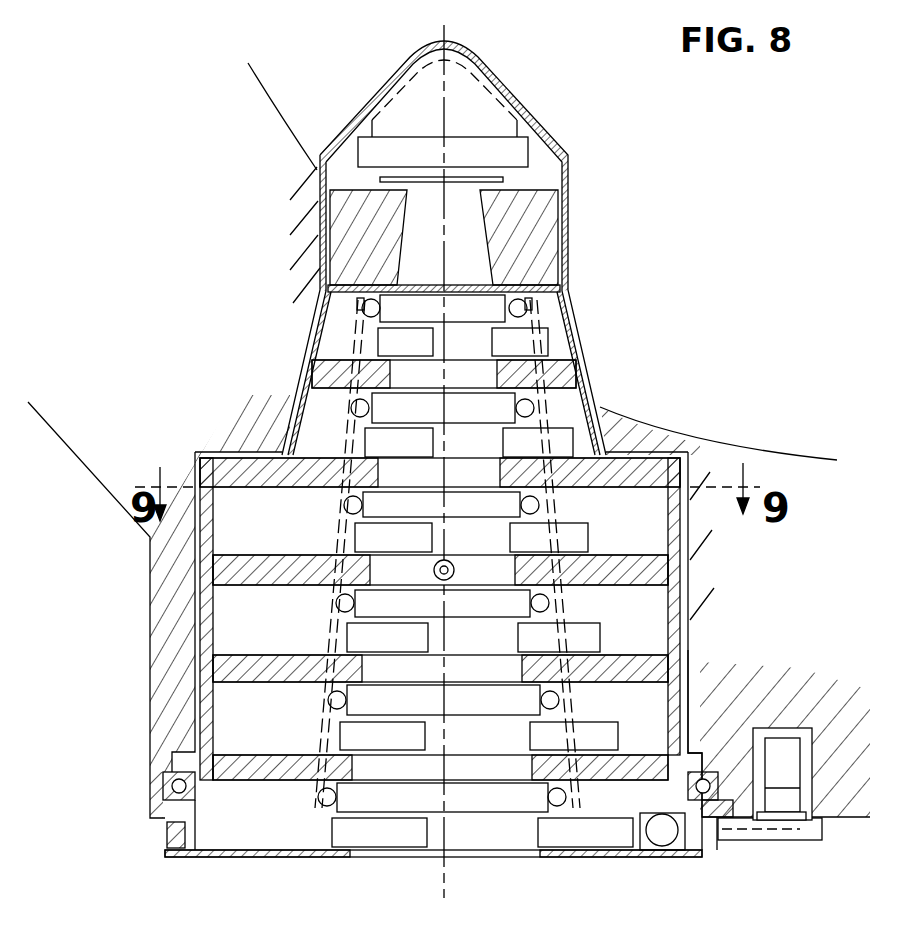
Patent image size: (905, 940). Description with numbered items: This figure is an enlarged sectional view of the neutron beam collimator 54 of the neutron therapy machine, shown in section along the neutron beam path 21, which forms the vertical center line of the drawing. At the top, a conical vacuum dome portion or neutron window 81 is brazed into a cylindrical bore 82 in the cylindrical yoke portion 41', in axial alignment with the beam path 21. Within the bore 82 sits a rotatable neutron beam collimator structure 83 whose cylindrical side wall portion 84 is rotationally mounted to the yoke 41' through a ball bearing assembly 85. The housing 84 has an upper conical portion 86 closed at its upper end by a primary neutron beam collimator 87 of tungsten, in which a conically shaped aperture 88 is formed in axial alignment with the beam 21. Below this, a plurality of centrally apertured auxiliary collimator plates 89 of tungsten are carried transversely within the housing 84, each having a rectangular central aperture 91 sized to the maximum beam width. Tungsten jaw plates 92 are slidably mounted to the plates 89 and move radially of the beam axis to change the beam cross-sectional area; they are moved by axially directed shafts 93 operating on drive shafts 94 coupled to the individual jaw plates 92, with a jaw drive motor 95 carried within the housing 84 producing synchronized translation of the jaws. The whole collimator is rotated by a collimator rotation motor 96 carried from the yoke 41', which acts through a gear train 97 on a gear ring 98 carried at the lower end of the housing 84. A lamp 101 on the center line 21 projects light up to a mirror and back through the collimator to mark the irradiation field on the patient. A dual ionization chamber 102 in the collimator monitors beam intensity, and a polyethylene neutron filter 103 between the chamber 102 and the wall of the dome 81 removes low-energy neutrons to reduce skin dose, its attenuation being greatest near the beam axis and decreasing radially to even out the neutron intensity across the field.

The neutron beam path 21 is at (444, 900).
The cylindrical yoke portion 41' is at (449, 440).
The neutron beam collimator 54 is at (232, 380).
The conical vacuum dome portion 81 is at (512, 92).
The cylindrical bore 82 is at (655, 462).
The rotatable neutron beam collimator structure 83 is at (224, 803).
The cylindrical side wall portion 84 is at (678, 708).
The ball bearing assembly 85 is at (700, 787).
The upper conical portion 86 is at (580, 335).
The primary neutron beam collimator 87 is at (540, 245).
The conically shaped aperture 88 is at (410, 213).
The auxiliary collimator plates 89 is at (560, 368).
The rectangular central aperture 91 is at (382, 474).
The jaw plates 92 is at (466, 328).
The axially directed shafts 93 is at (560, 603).
The drive shafts 94 is at (360, 310).
The jaw drive motor 95 is at (662, 838).
The collimator rotation motor 96 is at (790, 772).
The gear train 97 is at (762, 830).
The gear ring 98 is at (718, 832).
The lamp 101 is at (454, 570).
The dual ionization chamber 102 is at (515, 150).
The neutron filter 103 is at (470, 83).